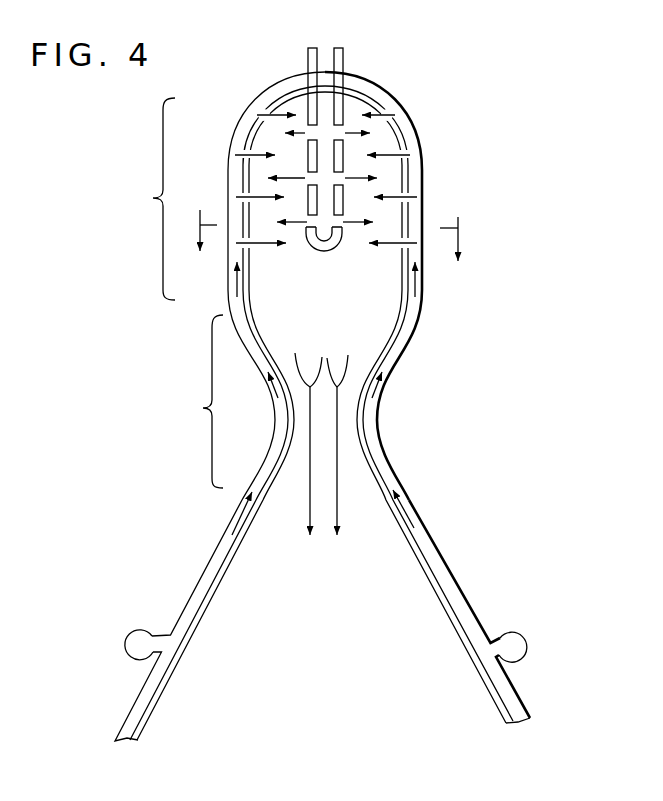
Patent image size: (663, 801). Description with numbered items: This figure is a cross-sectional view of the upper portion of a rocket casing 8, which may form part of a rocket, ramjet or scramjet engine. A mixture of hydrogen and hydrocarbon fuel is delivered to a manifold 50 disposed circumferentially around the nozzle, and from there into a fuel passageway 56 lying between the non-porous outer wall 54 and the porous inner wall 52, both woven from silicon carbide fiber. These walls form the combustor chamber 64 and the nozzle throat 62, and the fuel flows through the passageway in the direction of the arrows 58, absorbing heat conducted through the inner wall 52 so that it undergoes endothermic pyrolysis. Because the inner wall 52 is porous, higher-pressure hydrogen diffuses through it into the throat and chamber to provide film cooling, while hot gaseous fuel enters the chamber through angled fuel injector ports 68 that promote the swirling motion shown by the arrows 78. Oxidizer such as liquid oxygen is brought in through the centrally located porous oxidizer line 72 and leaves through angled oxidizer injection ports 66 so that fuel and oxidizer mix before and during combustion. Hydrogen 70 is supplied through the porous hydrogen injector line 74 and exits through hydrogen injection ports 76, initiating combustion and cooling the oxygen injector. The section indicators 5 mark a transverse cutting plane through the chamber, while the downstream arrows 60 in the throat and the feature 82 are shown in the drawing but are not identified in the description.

The section line 5- 5 is at (328, 219).
The rocket casing 8 is at (156, 234).
The manifold 50 is at (128, 633).
The inner wall 52 is at (208, 608).
The outer wall 54 is at (204, 566).
The fuel passageway 56 is at (437, 574).
The fuel flow arrows 58 is at (374, 391).
The central outlet flow 60 is at (321, 436).
The nozzle throat 62 is at (195, 401).
The combustor chamber 64 is at (147, 199).
The oxidizer injection ports 66 is at (305, 127).
The fuel injector ports 68 is at (248, 151).
The hydrogen 70 is at (341, 39).
The oxidizer line 72 is at (326, 31).
The hydrogen injector line 74 is at (345, 106).
The hydrogen injection ports 76 is at (360, 104).
The swirling fuel arrows 78 is at (250, 246).
The middle aperture 82 is at (288, 178).